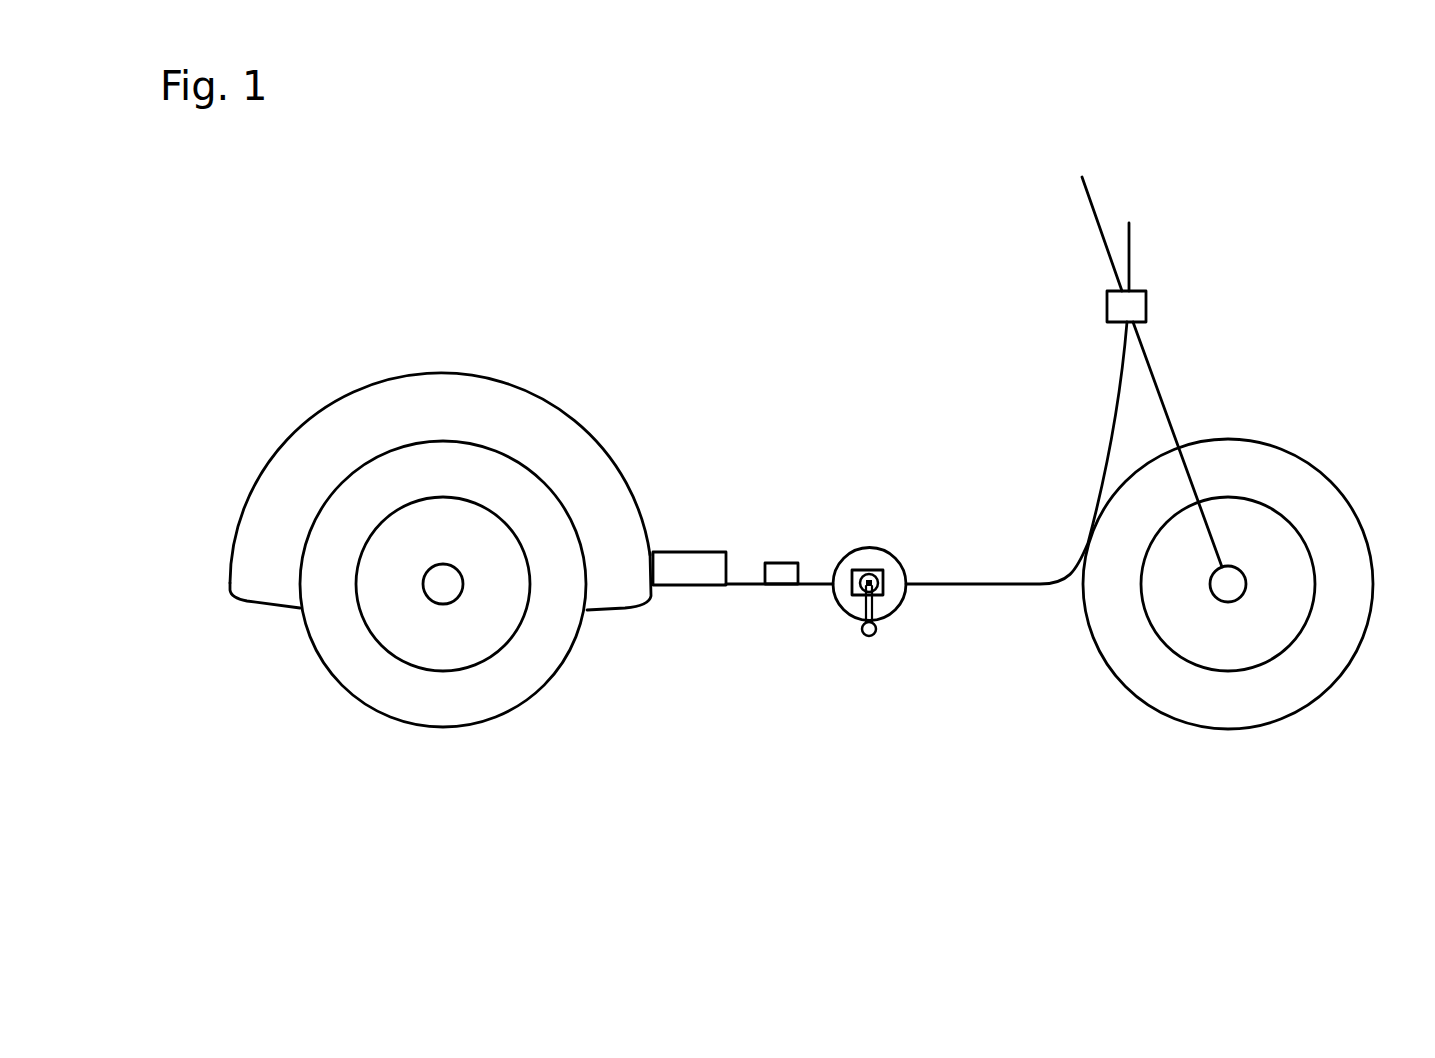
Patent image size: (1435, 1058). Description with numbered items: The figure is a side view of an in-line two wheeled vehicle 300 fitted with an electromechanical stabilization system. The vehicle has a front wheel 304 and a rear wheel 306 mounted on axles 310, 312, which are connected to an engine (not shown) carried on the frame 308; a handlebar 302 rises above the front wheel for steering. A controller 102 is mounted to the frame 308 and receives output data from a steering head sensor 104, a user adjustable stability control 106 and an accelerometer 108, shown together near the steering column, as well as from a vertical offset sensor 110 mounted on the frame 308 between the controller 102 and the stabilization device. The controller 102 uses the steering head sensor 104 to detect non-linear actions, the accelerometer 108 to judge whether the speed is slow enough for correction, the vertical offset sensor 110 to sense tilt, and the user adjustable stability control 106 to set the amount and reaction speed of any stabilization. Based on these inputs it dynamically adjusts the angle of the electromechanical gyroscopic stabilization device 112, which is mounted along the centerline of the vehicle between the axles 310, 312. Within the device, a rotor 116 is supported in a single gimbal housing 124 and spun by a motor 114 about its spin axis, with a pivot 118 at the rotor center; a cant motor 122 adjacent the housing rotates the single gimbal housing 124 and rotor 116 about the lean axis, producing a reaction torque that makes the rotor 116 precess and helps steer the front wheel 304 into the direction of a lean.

The electric scooter 300 is at (784, 248).
The handlebar 302 is at (1097, 200).
The front wheel 304 is at (1310, 688).
The rear wheel 306 is at (545, 688).
The frame 308 is at (1015, 590).
The axle 310 is at (438, 585).
The axle 312 is at (1230, 593).
The controller 102 is at (681, 563).
The steering head sensor 104 is at (1206, 291).
The user adjustable stability control 106 is at (1206, 291).
The accelerometer 108 is at (1142, 293).
The vertical offset sensor 110 is at (785, 568).
The electromechanical gyroscopic stabilization device 112 is at (872, 538).
The motor 114 is at (883, 572).
The rotor 116 is at (902, 605).
The pivot 118 is at (862, 570).
The cant motor 122 is at (866, 640).
The single gimbal housing 124 is at (876, 612).